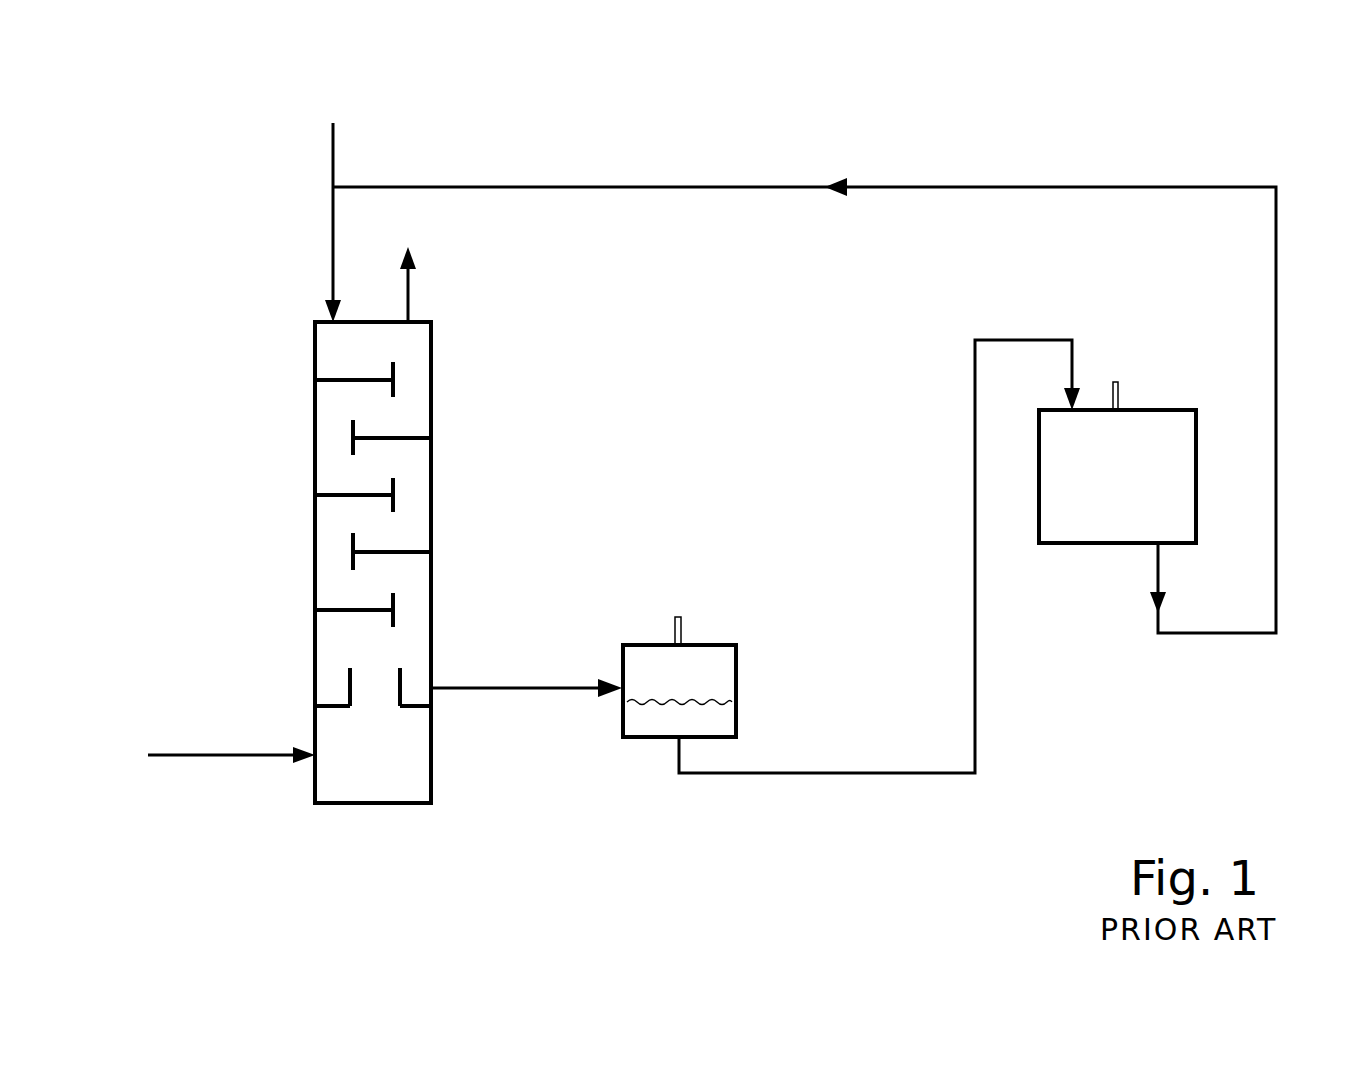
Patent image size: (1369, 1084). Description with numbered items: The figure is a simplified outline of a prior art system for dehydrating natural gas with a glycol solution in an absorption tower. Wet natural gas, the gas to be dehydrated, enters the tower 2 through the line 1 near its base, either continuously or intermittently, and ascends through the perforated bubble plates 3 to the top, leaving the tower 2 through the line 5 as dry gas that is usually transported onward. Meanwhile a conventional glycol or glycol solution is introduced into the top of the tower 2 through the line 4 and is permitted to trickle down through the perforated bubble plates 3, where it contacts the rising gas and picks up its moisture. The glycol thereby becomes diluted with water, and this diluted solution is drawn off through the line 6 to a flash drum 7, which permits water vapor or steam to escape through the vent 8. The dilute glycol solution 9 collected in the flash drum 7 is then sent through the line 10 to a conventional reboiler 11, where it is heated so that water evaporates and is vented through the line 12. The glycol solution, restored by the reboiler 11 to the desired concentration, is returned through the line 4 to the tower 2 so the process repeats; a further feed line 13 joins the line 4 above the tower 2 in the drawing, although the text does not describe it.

The feed line 1 is at (222, 755).
The distillation column 2 is at (432, 498).
The trays 3 is at (400, 433).
The recycle line 4 is at (333, 246).
The overhead outlet line 5 is at (410, 290).
The side draw line 6 is at (542, 688).
The separator vessel 7 is at (737, 663).
The vent 8 is at (683, 630).
The liquid phase 9 is at (668, 720).
The transfer line 10 is at (880, 775).
The treatment vessel 11 is at (1143, 489).
The vent 12 is at (1120, 390).
The make-up feed line 13 is at (335, 143).